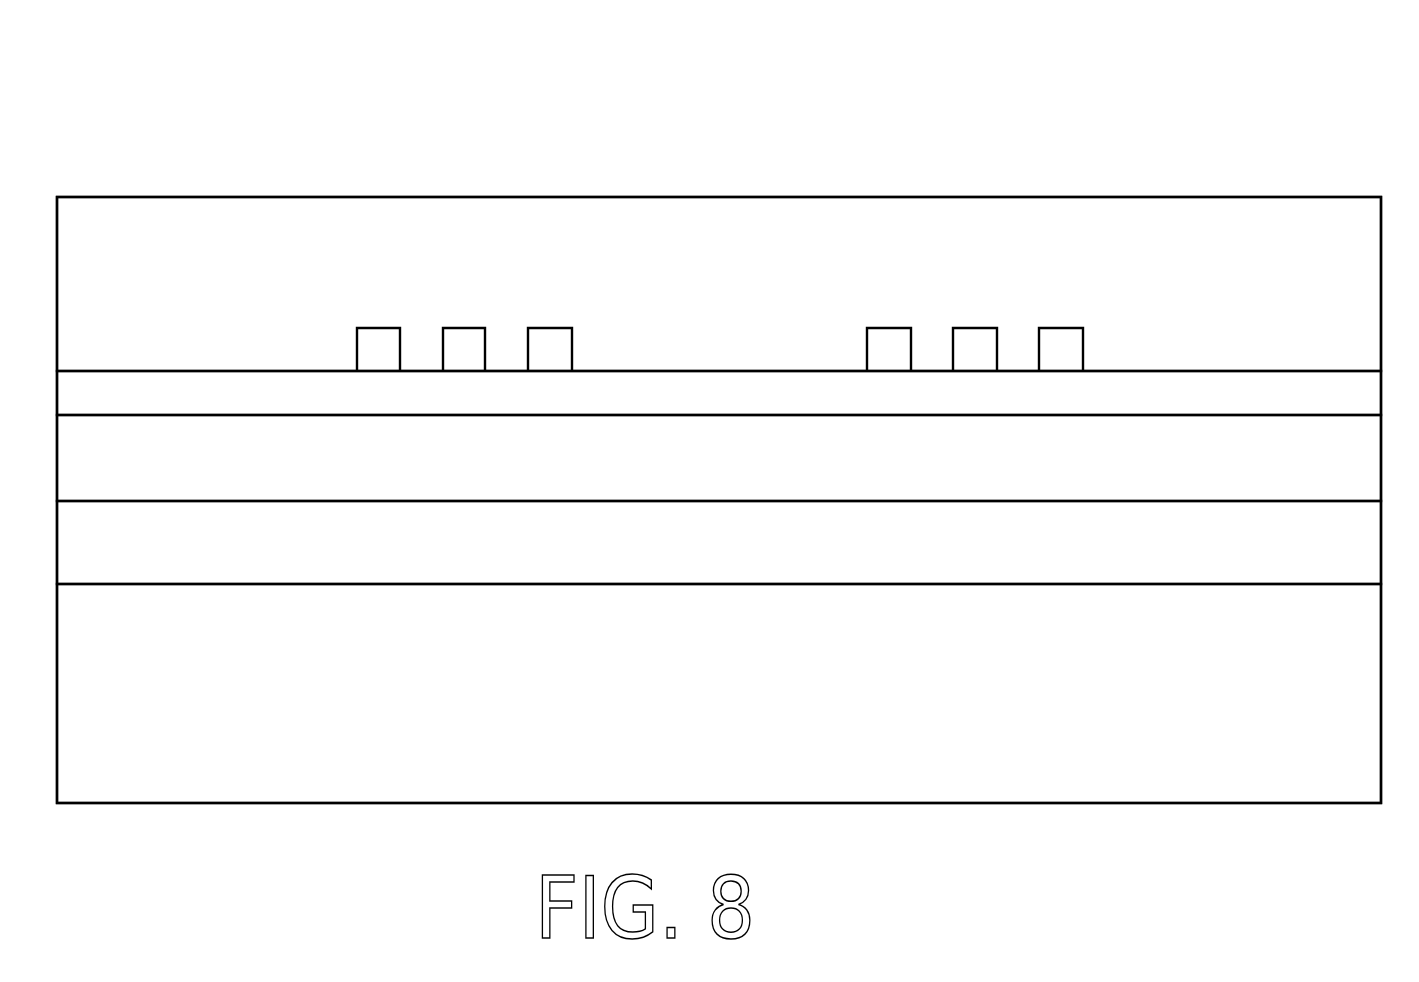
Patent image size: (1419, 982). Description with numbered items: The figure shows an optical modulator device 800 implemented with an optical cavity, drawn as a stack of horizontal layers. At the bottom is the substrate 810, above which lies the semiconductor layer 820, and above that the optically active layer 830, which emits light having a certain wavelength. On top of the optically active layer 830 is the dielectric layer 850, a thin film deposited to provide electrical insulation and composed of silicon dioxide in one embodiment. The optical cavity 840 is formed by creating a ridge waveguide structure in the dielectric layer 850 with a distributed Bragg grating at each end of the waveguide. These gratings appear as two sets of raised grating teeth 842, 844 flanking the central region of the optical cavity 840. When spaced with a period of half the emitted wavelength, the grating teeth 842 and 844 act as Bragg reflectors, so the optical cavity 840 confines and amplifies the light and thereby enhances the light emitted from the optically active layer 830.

The optical modulator device 800 is at (298, 860).
The substrate 810 is at (803, 719).
The semiconductor layer 820 is at (880, 559).
The optically active layer 830 is at (880, 470).
The optical cavity 840 is at (729, 346).
The grating teeth 842 is at (546, 302).
The grating teeth 844 is at (893, 302).
The dielectric layer 850 is at (447, 409).